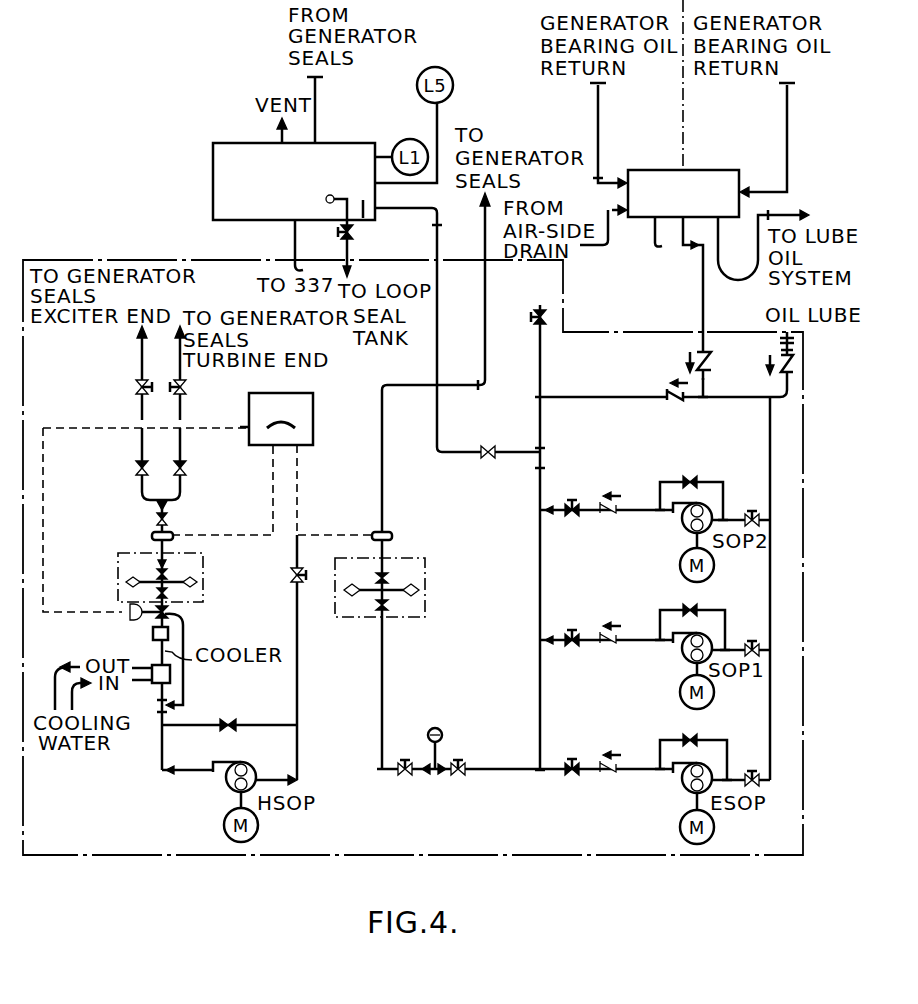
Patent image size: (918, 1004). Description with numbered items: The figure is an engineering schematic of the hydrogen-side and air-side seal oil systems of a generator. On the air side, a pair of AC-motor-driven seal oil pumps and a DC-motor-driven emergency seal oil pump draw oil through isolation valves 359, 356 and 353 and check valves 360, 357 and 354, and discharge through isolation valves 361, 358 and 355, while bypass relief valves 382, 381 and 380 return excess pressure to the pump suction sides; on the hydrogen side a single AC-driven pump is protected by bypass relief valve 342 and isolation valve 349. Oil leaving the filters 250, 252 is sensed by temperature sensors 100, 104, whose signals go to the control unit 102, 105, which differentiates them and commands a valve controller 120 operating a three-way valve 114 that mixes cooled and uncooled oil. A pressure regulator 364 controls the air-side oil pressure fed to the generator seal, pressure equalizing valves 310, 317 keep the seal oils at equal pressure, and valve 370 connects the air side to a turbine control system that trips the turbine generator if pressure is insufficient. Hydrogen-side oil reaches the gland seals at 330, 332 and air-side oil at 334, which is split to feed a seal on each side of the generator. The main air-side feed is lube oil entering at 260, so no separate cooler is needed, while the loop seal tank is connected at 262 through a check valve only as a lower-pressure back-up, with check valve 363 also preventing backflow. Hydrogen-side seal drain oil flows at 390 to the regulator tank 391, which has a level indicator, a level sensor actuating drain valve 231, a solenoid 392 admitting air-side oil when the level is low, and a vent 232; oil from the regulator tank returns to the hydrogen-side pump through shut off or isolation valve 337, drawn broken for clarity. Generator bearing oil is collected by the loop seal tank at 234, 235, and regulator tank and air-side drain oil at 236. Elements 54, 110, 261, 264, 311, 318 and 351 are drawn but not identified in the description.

The loop seal tank 54 is at (655, 248).
The temperature sensor 100 is at (390, 530).
The control unit 102 is at (322, 434).
The temperature sensor 104 is at (150, 533).
The control unit 105 is at (298, 445).
The filter 110 is at (152, 632).
The three-way valve 114 is at (170, 613).
The valve controller 120 is at (128, 612).
The drain valve 231 is at (355, 236).
The vent 232 is at (278, 130).
The generator bearing oil return 234 is at (787, 145).
The generator bearing oil return 235 is at (598, 110).
The air-side drain collection 236 is at (597, 250).
The filter 250 is at (425, 606).
The filter 252 is at (118, 570).
The lube oil feed 260 is at (792, 390).
The lube oil line 261 is at (785, 335).
The check valve 262 is at (700, 335).
The supply line 264 is at (705, 380).
The pressure equalizing valve 310 is at (136, 470).
The isolation valve 311 is at (136, 389).
The pressure equalizing valve 317 is at (186, 470).
The isolation valve 318 is at (187, 392).
The hydrogen-side oil feed 330 is at (176, 365).
The hydrogen-side oil feed 332 is at (142, 356).
The air-side oil feed 334 is at (480, 210).
The shut off or isolation valve 337 is at (290, 575).
The bypass relief valve 342 is at (232, 718).
The isolation valve 349 is at (458, 780).
The valve 351 is at (404, 780).
The isolation valve 353 is at (572, 780).
The check valve 354 is at (606, 780).
The isolation valve 355 is at (752, 772).
The isolation valve 356 is at (572, 650).
The check valve 357 is at (608, 650).
The isolation valve 358 is at (755, 642).
The isolation valve 359 is at (572, 520).
The check valve 360 is at (608, 520).
The isolation valve 361 is at (755, 512).
The check valve 363 is at (675, 405).
The pressure regulator 364 is at (440, 755).
The valve 370 is at (530, 320).
The bypass relief valve 380 is at (694, 733).
The bypass relief valve 381 is at (695, 605).
The bypass relief valve 382 is at (695, 475).
The hydrogen-side seal drain 390 is at (318, 118).
The regulator tank 391 is at (355, 143).
The solenoid 392 is at (488, 462).